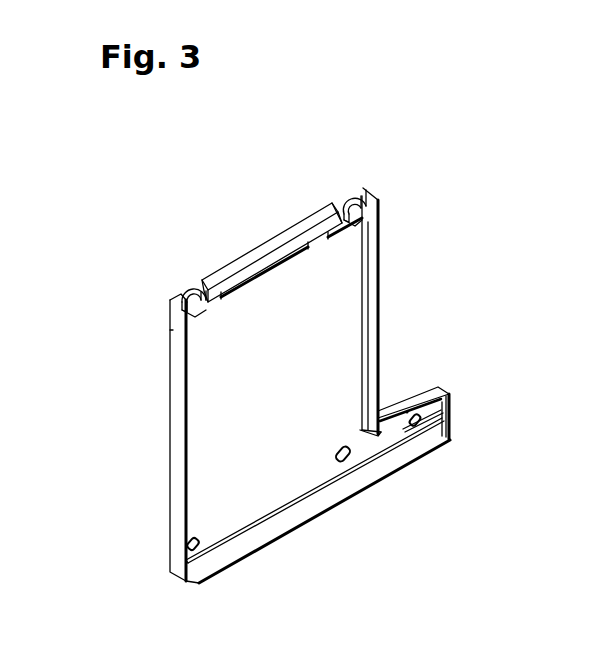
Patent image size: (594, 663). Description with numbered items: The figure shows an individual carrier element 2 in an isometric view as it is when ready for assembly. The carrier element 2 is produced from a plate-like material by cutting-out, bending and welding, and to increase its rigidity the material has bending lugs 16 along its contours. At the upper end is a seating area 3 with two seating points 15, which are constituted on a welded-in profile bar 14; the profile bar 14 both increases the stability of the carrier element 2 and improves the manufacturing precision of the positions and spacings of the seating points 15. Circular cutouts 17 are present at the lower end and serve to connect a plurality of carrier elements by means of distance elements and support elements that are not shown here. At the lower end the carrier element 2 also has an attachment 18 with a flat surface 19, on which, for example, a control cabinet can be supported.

The carrier element 2 is at (250, 438).
The seating area 3 is at (216, 251).
The profile bar 14 is at (285, 245).
The seating point 15 is at (343, 200).
The bending lug 16 is at (372, 272).
The circular cutout 17 is at (413, 418).
The attachment 18 is at (460, 403).
The flat surface 19 is at (430, 397).